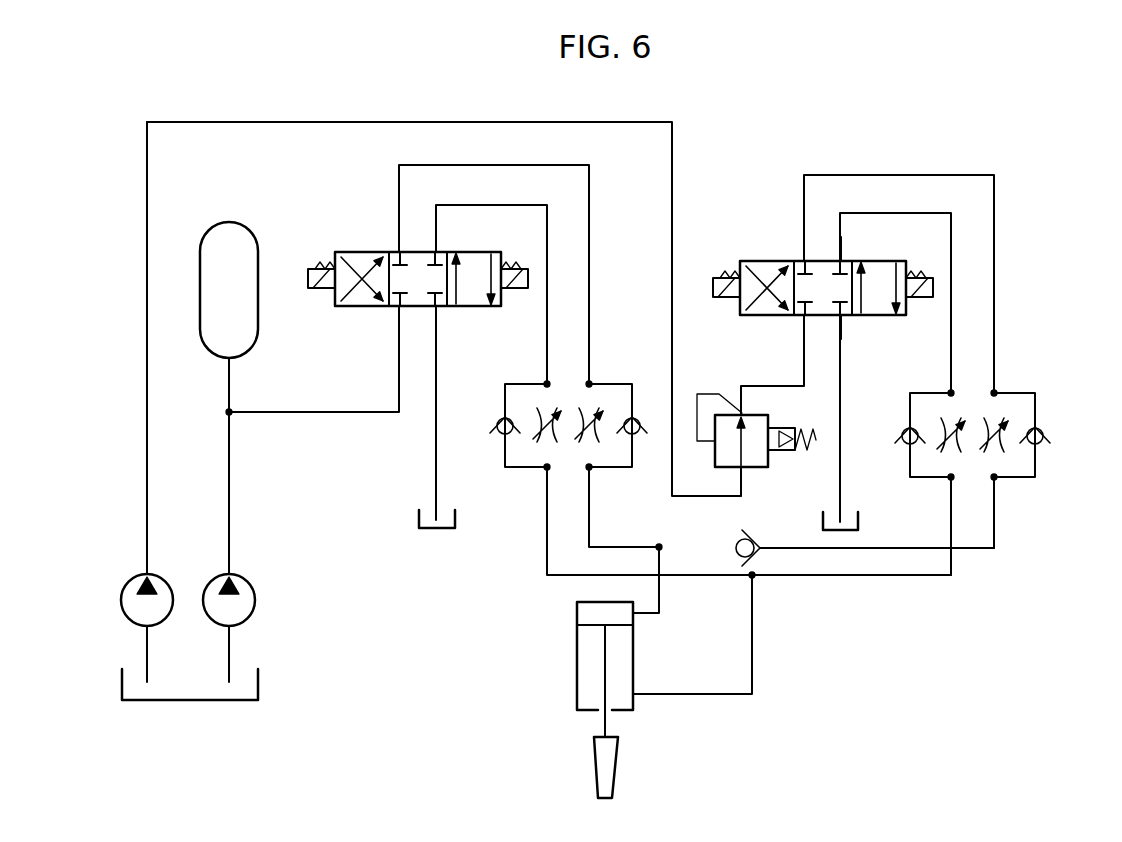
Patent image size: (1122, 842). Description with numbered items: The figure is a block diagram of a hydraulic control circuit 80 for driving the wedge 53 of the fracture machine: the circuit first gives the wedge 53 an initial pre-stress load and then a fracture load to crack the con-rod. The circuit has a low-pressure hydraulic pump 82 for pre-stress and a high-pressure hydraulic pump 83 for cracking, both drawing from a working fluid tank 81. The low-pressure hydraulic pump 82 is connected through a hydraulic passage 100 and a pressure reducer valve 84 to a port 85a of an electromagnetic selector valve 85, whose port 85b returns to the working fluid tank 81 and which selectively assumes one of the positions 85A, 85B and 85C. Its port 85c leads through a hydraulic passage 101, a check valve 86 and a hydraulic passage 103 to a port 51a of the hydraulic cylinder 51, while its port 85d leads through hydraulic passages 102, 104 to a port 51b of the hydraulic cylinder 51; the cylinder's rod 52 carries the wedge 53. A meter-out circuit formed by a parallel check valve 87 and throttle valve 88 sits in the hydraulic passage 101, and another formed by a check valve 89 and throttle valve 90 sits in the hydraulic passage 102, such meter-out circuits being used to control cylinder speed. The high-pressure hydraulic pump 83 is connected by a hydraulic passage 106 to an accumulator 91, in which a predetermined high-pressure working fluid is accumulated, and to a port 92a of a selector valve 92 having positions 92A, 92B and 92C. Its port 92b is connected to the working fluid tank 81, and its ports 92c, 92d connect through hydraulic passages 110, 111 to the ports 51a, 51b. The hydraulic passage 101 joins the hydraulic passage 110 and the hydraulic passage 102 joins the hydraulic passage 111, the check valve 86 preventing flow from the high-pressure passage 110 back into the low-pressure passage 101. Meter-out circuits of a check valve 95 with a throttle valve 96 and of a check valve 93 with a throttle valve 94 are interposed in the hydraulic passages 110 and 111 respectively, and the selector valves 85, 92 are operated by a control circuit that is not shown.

The hydraulic control circuit 80 is at (718, 168).
The working fluid tank 81 is at (262, 683).
The low-pressure hydraulic pump 82 is at (120, 598).
The high-pressure hydraulic pump 83 is at (256, 598).
The pressure reducer valve 84 is at (772, 456).
The electromagnetic selector valve 85 is at (820, 284).
The position of selector valve 85A is at (899, 323).
The position of selector valve 85B is at (747, 318).
The position of selector valve 85C is at (827, 249).
The port of selector valve 85a is at (781, 340).
The port of selector valve 85b is at (864, 340).
The port of selector valve 85c is at (780, 240).
The port of selector valve 85d is at (867, 240).
The check valve 86 is at (735, 545).
The check valve 87 is at (903, 445).
The throttle valve 88 is at (940, 422).
The check valve 89 is at (1046, 426).
The throttle valve 90 is at (1010, 447).
The accumulator 91 is at (229, 222).
The selector valve 92 is at (400, 274).
The position of selector valve 92A is at (490, 307).
The position of selector valve 92B is at (340, 307).
The position of selector valve 92C is at (418, 251).
The port of selector valve 92a is at (395, 308).
The port of selector valve 92b is at (437, 308).
The port of selector valve 92c is at (398, 251).
The port of selector valve 92d is at (436, 251).
The check valve 93 is at (498, 440).
The throttle valve 94 is at (538, 440).
The check valve 95 is at (630, 410).
The throttle valve 96 is at (598, 440).
The hydraulic passage 100 is at (145, 450).
The hydraulic passage 101 is at (793, 547).
The hydraulic passage 102 is at (900, 576).
The hydraulic passage 103 is at (661, 590).
The hydraulic passage 104 is at (752, 640).
The hydraulic passage 106 is at (230, 493).
The hydraulic passage 110 is at (592, 308).
The hydraulic passage 111 is at (547, 298).
The hydraulic cylinder 51 is at (602, 674).
The port of hydraulic cylinder 51a is at (636, 614).
The port of hydraulic cylinder 51b is at (636, 710).
The piston rod 52 is at (603, 720).
The wedge 53 is at (596, 764).